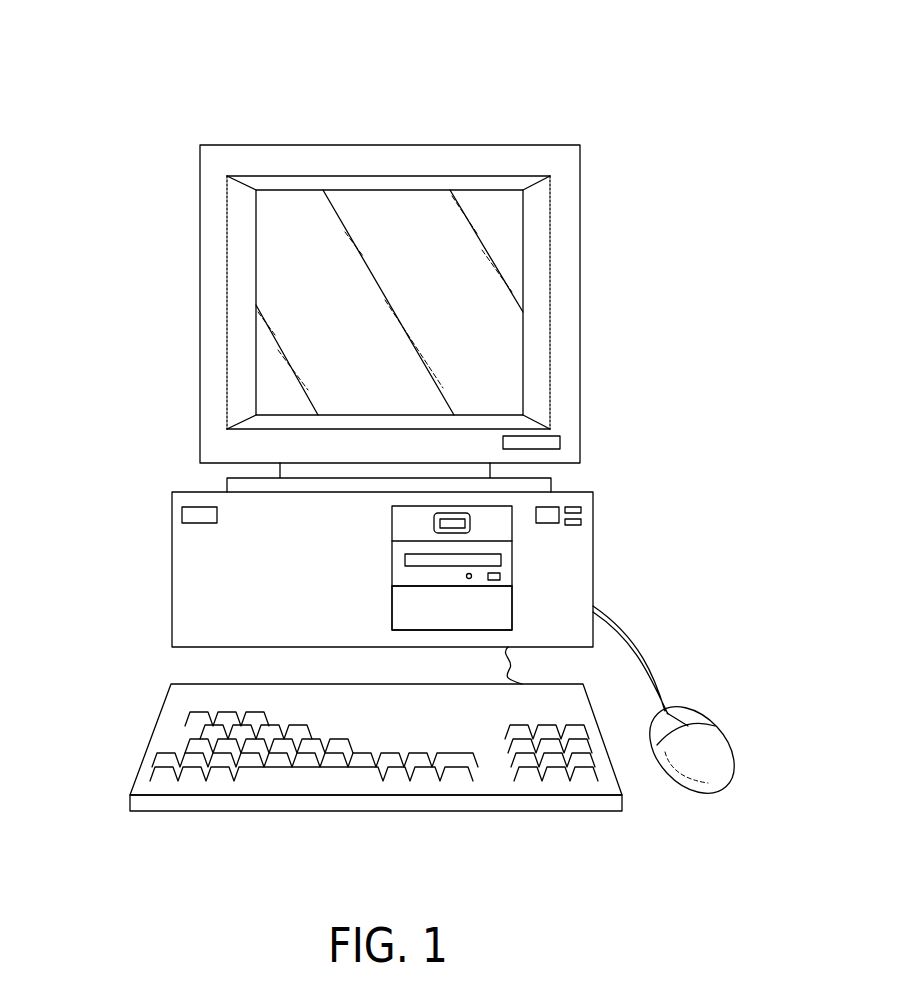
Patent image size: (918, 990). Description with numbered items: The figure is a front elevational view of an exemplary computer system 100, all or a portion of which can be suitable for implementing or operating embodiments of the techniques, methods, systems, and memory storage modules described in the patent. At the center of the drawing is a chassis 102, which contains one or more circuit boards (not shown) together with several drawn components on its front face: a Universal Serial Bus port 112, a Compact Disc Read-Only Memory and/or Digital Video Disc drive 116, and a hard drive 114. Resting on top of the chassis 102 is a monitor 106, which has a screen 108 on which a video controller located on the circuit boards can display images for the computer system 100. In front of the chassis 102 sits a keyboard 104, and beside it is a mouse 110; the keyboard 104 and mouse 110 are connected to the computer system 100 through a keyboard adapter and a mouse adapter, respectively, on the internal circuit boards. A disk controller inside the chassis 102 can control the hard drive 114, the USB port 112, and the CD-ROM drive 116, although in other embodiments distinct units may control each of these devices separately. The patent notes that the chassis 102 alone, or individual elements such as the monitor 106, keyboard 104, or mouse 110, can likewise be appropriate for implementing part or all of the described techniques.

The computer system 100 is at (577, 118).
The chassis 102 is at (168, 572).
The keyboard 104 is at (150, 742).
The monitor 106 is at (276, 145).
The screen 108 is at (303, 307).
The mouse 110 is at (712, 740).
The Universal Serial Bus (USB) port 112 is at (472, 520).
The hard drive 114 is at (503, 607).
The Compact Disc Read-Only Memory (CD-ROM) and/or Digital Video Disc (DVD) drive 116 is at (503, 565).